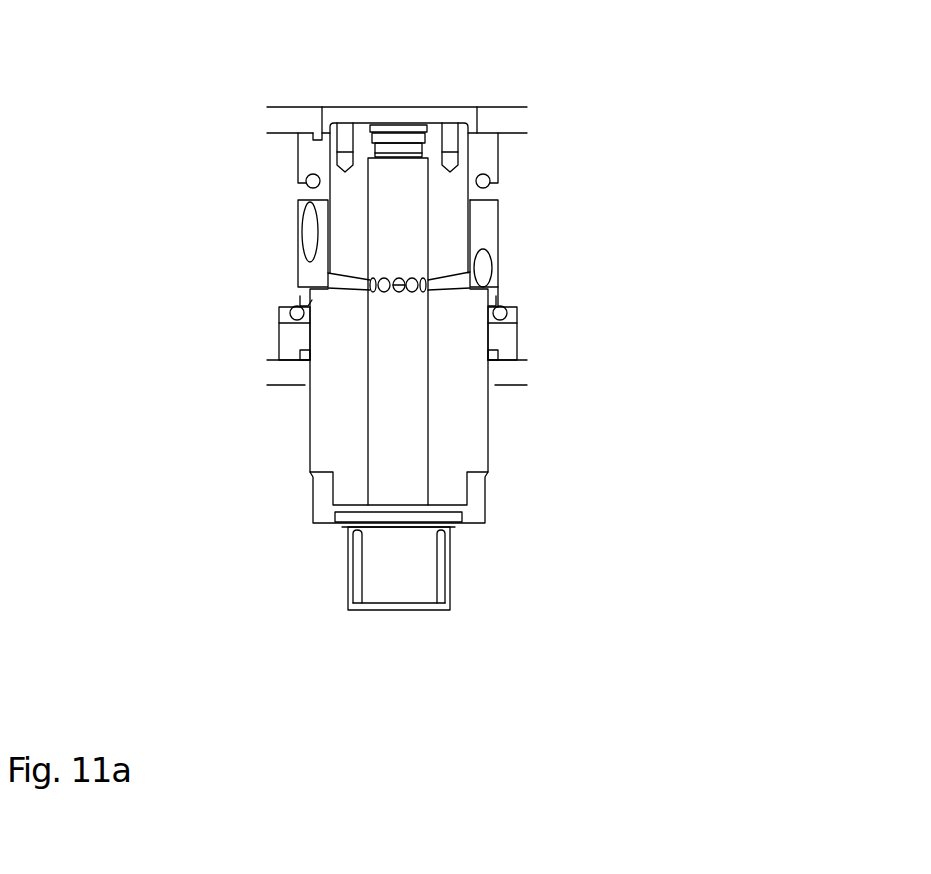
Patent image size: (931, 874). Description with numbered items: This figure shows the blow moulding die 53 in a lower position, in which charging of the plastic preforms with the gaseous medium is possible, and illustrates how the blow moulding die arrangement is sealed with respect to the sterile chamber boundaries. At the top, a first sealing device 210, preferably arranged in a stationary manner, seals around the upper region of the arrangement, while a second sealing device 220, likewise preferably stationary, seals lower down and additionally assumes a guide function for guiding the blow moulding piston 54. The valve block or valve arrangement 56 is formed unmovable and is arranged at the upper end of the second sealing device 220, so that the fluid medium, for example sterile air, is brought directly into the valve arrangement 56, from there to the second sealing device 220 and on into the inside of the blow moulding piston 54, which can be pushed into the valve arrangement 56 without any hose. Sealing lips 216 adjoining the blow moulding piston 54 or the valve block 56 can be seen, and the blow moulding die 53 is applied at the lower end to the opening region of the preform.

The first sealing device 210 is at (503, 138).
The sealing lips 216 is at (312, 305).
The valve arrangement 56 is at (520, 249).
The second sealing device 220 is at (517, 338).
The blow moulding piston 54 is at (470, 447).
The blow moulding die 53 is at (343, 563).